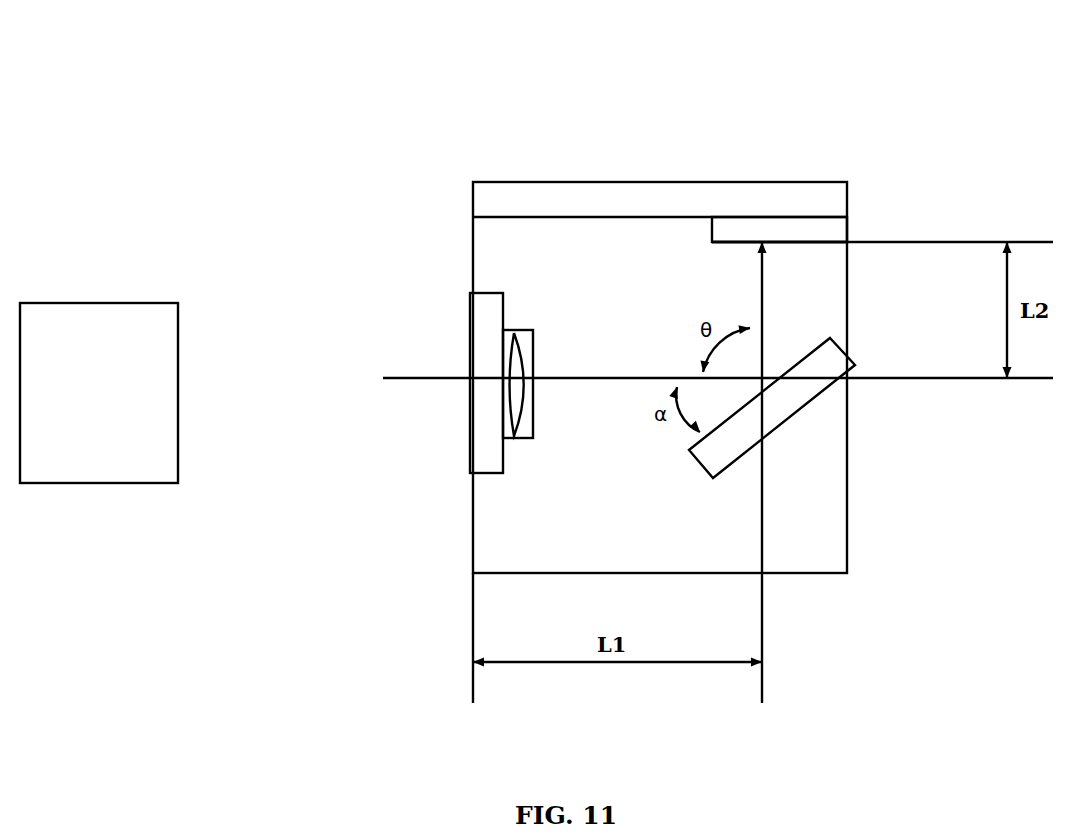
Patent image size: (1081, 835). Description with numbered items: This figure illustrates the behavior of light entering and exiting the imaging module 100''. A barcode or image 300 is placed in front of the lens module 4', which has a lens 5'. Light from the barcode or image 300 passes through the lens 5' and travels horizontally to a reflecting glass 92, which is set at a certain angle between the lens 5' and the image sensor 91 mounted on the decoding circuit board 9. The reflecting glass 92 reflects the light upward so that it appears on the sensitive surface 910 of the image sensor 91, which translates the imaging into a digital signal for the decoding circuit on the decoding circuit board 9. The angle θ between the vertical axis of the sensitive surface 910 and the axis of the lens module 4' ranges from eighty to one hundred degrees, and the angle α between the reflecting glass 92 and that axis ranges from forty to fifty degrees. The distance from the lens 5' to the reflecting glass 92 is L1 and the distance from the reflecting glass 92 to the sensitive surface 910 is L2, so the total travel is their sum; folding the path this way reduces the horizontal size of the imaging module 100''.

The imaging module 100'' is at (718, 189).
The decoding circuit board 9 is at (665, 155).
The image sensor 91 is at (837, 228).
The sensitive surface 910 is at (808, 241).
The reflecting glass 92 is at (798, 408).
The lens module 4' is at (416, 450).
The lens 5' is at (518, 490).
The barcode or image 300 is at (97, 507).